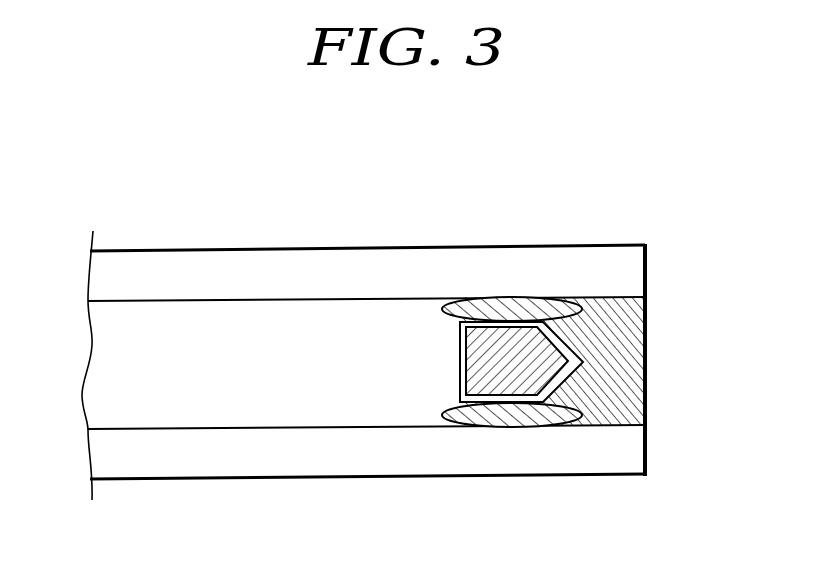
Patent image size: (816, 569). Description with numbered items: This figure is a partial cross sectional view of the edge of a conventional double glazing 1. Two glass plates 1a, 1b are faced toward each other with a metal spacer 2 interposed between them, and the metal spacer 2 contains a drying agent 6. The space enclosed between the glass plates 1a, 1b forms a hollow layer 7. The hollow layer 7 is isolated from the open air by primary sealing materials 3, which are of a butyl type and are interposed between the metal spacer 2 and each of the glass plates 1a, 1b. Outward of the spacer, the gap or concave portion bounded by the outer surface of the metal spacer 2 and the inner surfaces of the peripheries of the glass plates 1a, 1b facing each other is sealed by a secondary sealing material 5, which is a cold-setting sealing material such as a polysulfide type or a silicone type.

The double glazing 1 is at (418, 367).
The glass plate 1a is at (165, 273).
The glass plate 1b is at (167, 457).
The metal spacer 2 is at (573, 368).
The primary sealing materials 3 is at (518, 300).
The secondary sealing material 5 is at (632, 373).
The drying agent 6 is at (478, 362).
The hollow layer 7 is at (102, 363).